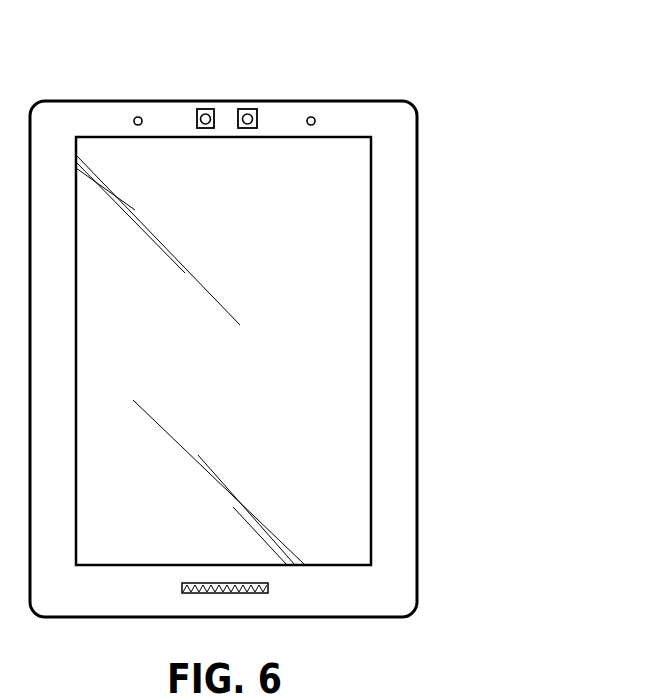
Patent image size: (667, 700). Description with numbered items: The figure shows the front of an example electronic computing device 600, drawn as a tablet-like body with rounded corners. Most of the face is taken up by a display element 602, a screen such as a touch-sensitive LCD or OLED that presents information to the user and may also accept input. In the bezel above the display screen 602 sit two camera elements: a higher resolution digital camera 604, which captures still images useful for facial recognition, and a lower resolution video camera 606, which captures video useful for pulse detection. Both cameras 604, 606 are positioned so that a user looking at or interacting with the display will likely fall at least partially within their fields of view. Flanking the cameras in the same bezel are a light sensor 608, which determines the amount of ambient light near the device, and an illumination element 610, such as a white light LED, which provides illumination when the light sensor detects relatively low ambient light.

The electronic computing device 600 is at (579, 113).
The display element 602 is at (370, 343).
The higher resolution digital camera 604 is at (197, 118).
The lower resolution video camera 606 is at (257, 122).
The light sensor 608 is at (315, 120).
The illumination element 610 is at (134, 121).